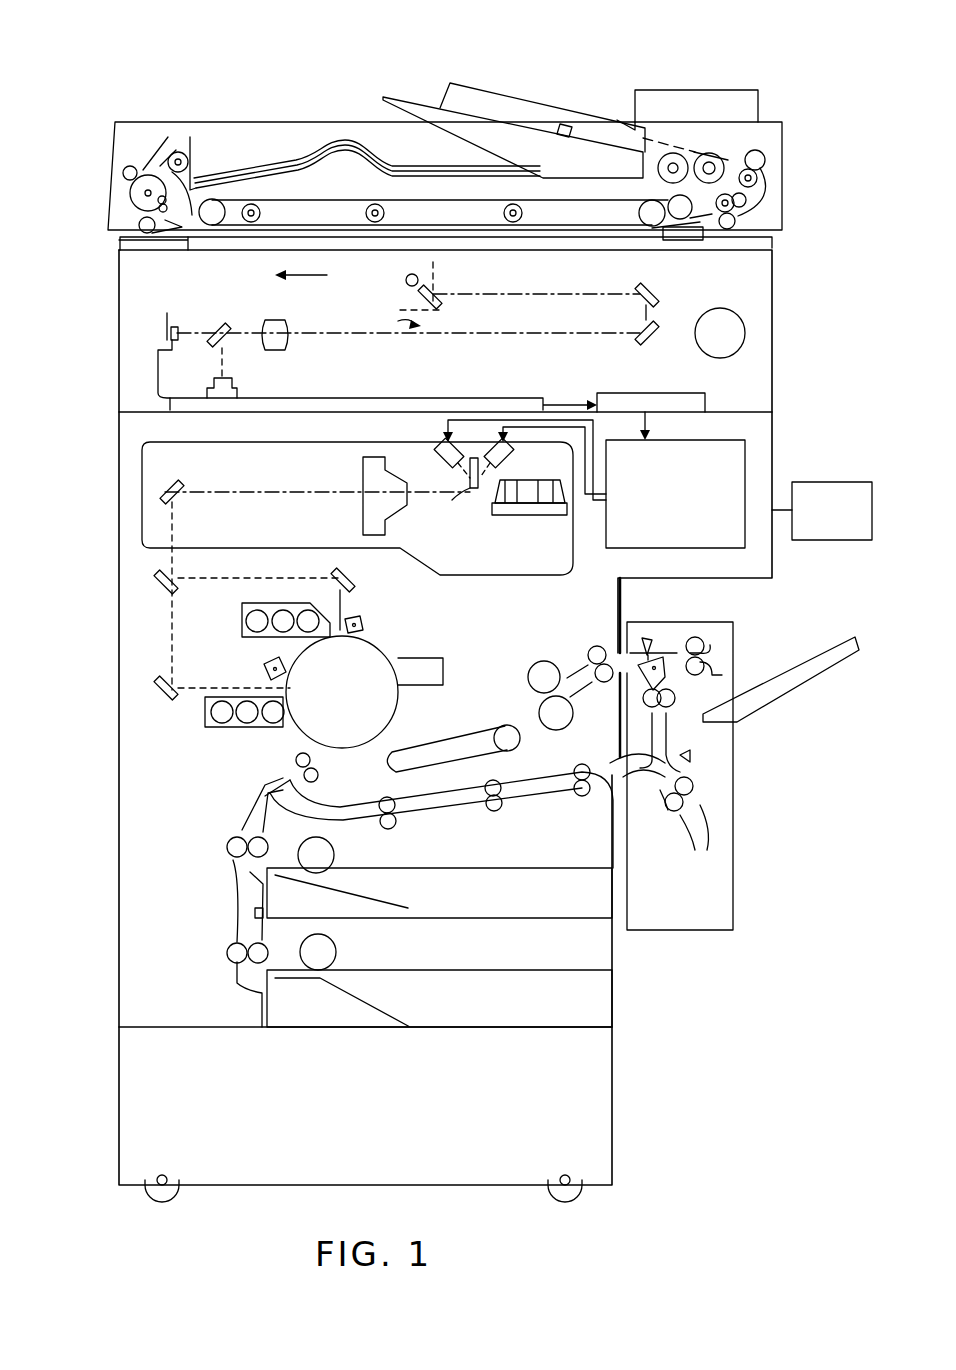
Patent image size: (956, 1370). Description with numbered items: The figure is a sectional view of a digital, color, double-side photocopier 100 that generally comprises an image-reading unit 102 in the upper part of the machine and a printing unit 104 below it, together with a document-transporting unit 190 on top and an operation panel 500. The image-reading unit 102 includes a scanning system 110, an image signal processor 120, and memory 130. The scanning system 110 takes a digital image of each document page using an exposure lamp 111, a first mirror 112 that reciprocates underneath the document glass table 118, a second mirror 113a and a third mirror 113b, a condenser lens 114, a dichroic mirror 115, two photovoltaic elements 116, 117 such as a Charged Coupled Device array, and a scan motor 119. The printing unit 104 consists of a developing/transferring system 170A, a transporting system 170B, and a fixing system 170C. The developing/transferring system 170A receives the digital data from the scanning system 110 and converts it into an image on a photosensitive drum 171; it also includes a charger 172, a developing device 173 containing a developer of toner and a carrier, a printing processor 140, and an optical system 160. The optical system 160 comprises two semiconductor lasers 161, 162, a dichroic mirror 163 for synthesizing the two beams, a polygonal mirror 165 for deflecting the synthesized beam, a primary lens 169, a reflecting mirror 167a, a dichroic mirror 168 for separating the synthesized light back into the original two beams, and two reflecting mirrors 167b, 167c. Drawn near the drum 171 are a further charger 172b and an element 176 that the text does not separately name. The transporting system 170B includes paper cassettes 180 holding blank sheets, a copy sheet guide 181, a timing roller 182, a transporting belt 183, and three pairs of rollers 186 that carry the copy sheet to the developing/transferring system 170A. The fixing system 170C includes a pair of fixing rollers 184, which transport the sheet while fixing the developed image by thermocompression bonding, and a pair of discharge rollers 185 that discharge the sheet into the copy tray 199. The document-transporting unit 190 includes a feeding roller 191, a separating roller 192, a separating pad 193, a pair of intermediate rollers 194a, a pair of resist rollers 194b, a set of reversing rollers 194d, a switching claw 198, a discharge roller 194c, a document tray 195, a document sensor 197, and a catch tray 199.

The photocopier 100 is at (70, 646).
The image-reading unit 102 is at (112, 348).
The printing unit 104 is at (112, 830).
The scanning system 110 is at (404, 291).
The exposure lamp 111 is at (402, 279).
The first mirror 112 is at (441, 301).
The second mirror 113a is at (655, 289).
The third mirror 113b is at (656, 330).
The condenser lens 114 is at (287, 343).
The dichroic mirror 115 is at (220, 323).
The photovoltaic element 116 is at (190, 311).
The photovoltaic element 117 is at (237, 395).
The document glass table 118 is at (535, 240).
The scan motor 119 is at (733, 338).
The image signal processor 120 is at (476, 404).
The memory 130 is at (608, 396).
The printing processor 140 is at (733, 470).
The optical system 160 is at (326, 452).
The semiconductor laser 161 is at (537, 456).
The semiconductor laser 162 is at (440, 437).
The dichroic mirror 163 is at (468, 485).
The polygonal mirror 165 is at (530, 497).
The reflecting mirror 167a is at (168, 478).
The reflecting mirror 167b is at (160, 698).
The reflecting mirror 167c is at (346, 581).
The dichroic mirror 168 is at (160, 589).
The primary lens 169 is at (363, 525).
The developing/transferring system 170A is at (236, 628).
The transporting system 170B is at (467, 723).
The fixing system 170C is at (473, 692).
The photosensitive drum 171 is at (308, 702).
The charger 172 is at (363, 618).
The charger 172b is at (266, 666).
The developing device 173 is at (281, 598).
The cleaner 176 is at (445, 660).
The paper cassettes 180 is at (527, 876).
The copy sheet guide 181 is at (230, 892).
The timing roller 182 is at (300, 758).
The transporting belt 183 is at (453, 730).
The fixing rollers 184 is at (548, 722).
The discharge rollers 185 is at (594, 650).
The pairs of rollers 186 is at (585, 794).
The document-transporting unit 190 is at (315, 116).
The feeding roller 191 is at (668, 150).
The separating roller 192 is at (677, 152).
The separating pad 193 is at (714, 152).
The intermediate rollers 194a is at (764, 154).
The resist rollers 194b is at (735, 222).
The discharge roller 194c is at (180, 152).
The reversing rollers 194d is at (143, 180).
The document tray 195 is at (506, 108).
The document sensor 197 is at (560, 125).
The switching claw 198 is at (152, 158).
The copy tray / catch tray 199 is at (251, 180).
The operation panel 500 is at (822, 511).